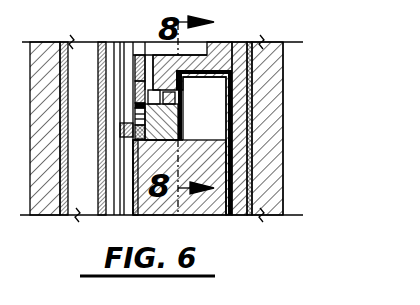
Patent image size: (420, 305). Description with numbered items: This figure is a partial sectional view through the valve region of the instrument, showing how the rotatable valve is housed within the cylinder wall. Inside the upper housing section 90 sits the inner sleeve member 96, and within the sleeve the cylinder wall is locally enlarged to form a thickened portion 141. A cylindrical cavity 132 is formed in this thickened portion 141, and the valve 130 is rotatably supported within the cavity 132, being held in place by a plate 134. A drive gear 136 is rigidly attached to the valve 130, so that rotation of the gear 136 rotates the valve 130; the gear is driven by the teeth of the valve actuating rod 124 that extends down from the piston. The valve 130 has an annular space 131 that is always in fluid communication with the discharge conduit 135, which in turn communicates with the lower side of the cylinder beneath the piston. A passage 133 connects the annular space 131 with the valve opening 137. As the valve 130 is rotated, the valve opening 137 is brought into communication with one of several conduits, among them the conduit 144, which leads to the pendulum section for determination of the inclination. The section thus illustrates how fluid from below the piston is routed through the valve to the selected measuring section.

The upper section 90 is at (283, 197).
The inner sleeve member 96 is at (252, 153).
The valve actuating rod 124 is at (125, 62).
The valve 130 is at (165, 140).
The annular space 131 is at (137, 147).
The cylindrical cavity 132 is at (237, 122).
The passage 133 is at (166, 92).
The plate 134 is at (133, 98).
The discharge conduit 135 is at (133, 70).
The drive gear 136 is at (132, 123).
The valve opening 137 is at (283, 100).
The thickened portion 141 is at (190, 57).
The conduit 144 is at (233, 215).